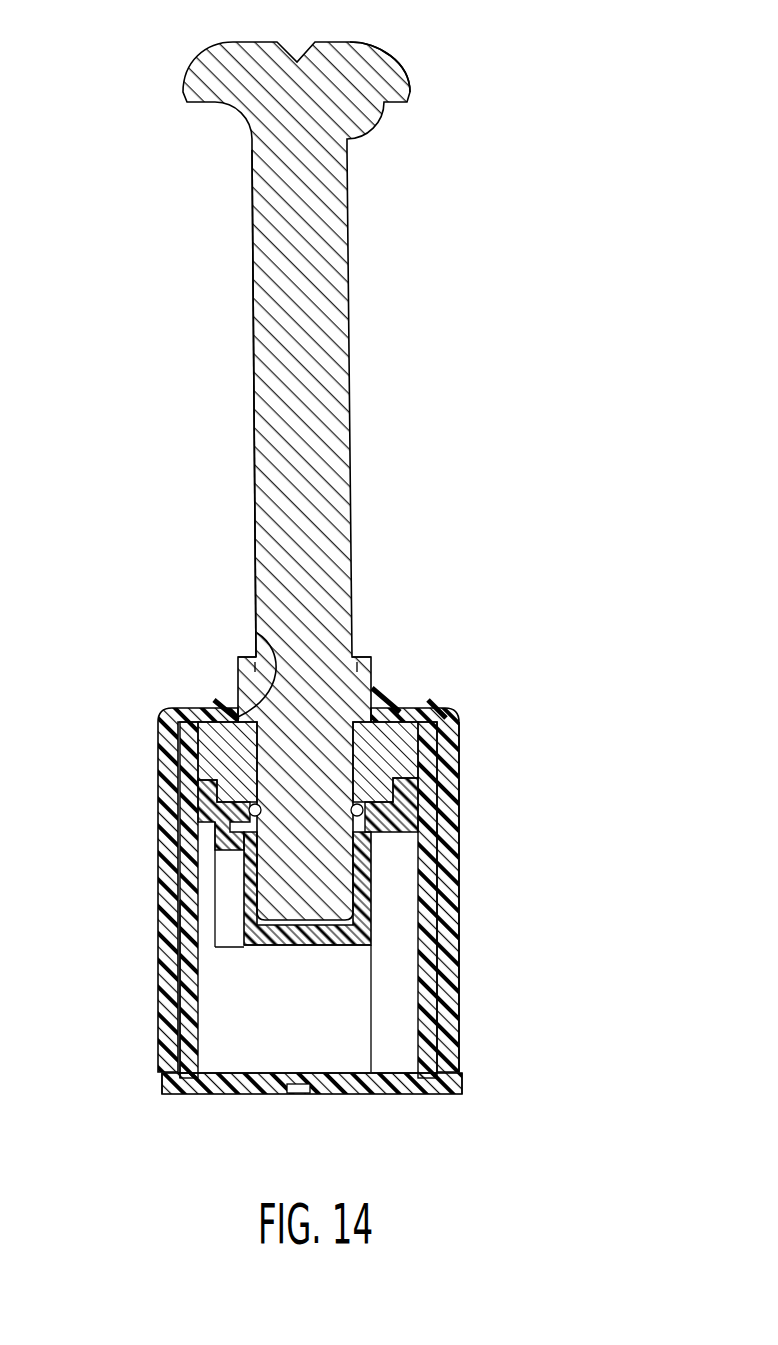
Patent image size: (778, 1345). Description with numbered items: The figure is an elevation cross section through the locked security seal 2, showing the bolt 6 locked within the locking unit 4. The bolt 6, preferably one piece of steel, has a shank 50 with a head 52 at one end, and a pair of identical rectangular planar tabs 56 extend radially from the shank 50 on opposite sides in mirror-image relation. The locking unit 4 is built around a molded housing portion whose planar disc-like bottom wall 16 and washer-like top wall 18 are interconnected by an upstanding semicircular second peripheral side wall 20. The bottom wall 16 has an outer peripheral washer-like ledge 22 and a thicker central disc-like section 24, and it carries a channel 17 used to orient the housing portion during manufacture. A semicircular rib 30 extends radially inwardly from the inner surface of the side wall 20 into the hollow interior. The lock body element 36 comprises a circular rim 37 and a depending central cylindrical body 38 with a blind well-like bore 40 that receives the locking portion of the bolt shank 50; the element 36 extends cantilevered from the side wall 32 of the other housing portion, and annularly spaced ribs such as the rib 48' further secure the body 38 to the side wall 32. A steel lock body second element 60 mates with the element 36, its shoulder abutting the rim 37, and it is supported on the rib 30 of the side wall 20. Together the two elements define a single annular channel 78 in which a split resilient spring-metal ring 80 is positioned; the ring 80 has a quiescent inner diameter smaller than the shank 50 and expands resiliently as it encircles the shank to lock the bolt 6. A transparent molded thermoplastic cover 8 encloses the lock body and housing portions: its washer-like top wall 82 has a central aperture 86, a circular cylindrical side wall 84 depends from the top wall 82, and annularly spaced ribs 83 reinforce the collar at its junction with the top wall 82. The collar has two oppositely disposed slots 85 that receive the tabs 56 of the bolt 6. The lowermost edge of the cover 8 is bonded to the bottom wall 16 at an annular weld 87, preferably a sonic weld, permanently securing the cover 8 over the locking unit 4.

The seal 2 is at (538, 232).
The locking unit 4 is at (469, 910).
The bolt 6 is at (326, 303).
The cover 8 is at (463, 748).
The bottom wall 16 is at (385, 1094).
The channel 17 is at (300, 1094).
The top wall 18 is at (459, 778).
The second peripheral side wall 20 is at (463, 983).
The ledge 22 is at (172, 1094).
The central circular disc-like section 24 is at (255, 1072).
The semicircular rib 30 is at (375, 847).
The side wall 32 is at (185, 958).
The lock body element 36 is at (270, 956).
The circular rim 37 is at (205, 800).
The central circular cylindrical body 38 is at (341, 950).
The blind well-like bore 40 is at (243, 912).
The rib 48' is at (144, 884).
The shank 50 is at (253, 343).
The head 52 is at (400, 62).
The tabs 56 is at (252, 660).
The lock body second element 60 is at (212, 760).
The annular channel 78 is at (240, 782).
The split resilient ring 80 is at (410, 812).
The top wall 82 is at (432, 710).
The ribs 83 is at (216, 702).
The side wall 84 is at (170, 1038).
The slots 85 is at (245, 655).
The central aperture 86 is at (256, 645).
The annular weld 87 is at (462, 1079).